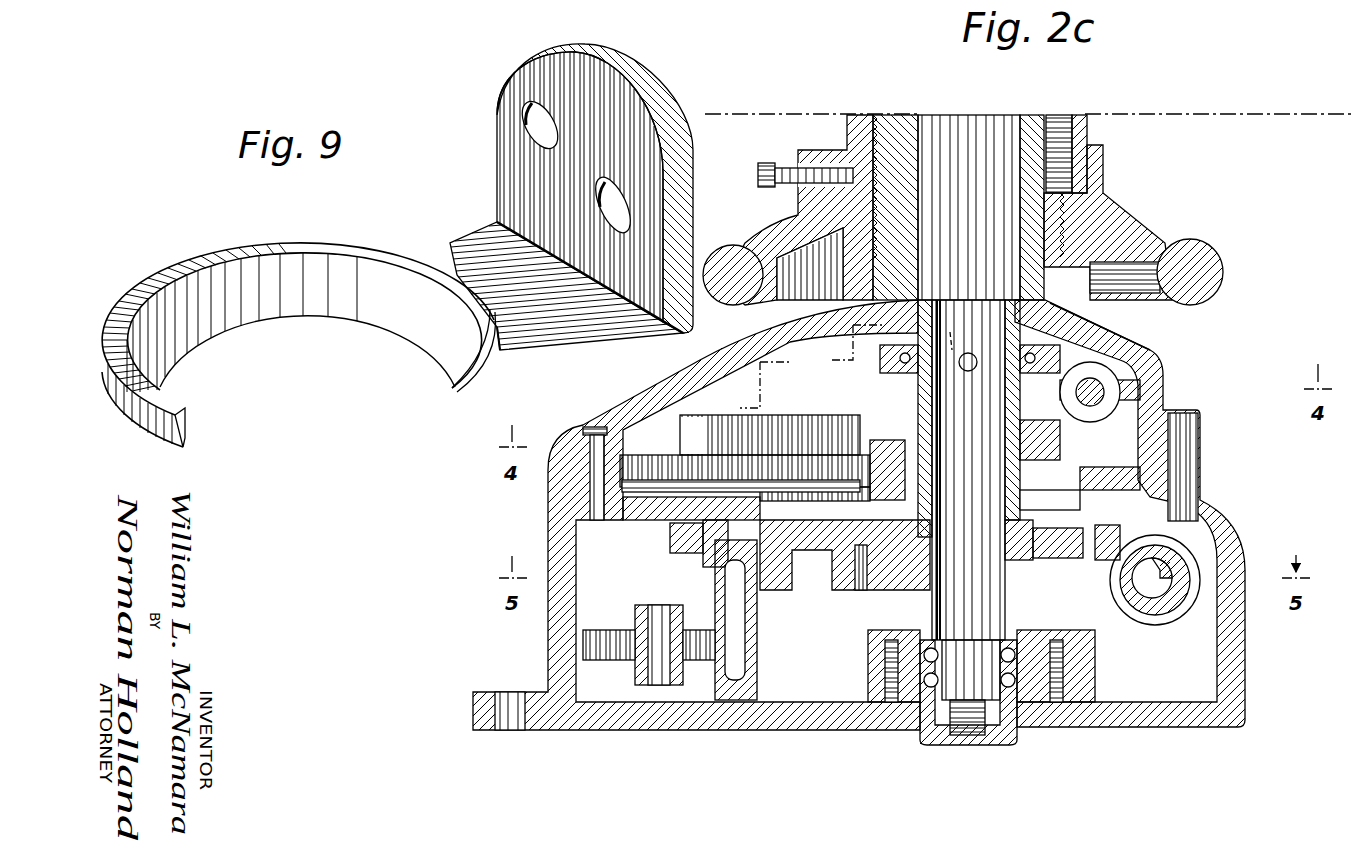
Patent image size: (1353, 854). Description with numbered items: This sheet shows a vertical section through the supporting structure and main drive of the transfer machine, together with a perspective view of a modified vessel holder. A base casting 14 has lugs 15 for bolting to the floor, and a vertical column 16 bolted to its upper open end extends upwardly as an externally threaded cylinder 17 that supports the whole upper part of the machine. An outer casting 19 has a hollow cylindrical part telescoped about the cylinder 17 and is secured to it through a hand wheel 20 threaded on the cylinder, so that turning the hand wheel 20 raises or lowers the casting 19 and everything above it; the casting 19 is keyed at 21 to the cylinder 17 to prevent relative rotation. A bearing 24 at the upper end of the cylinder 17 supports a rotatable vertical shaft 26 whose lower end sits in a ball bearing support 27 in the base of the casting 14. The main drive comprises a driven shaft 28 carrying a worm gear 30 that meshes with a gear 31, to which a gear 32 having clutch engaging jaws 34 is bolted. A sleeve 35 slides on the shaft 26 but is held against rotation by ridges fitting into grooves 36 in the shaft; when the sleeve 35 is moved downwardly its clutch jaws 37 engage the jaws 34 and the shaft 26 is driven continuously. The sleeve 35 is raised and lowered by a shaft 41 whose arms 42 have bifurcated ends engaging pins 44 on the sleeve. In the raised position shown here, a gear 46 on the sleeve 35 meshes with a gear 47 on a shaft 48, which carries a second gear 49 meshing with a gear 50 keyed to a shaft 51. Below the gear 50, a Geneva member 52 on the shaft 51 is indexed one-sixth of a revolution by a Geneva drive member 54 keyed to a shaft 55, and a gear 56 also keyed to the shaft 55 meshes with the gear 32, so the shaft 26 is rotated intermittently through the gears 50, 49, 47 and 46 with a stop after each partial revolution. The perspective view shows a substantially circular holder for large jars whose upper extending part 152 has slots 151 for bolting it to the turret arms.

In FIG. 2C, the base casting 14 is at (1252, 654).
In FIG. 2C, the lugs 15 is at (473, 700).
In FIG. 2C, the vertical column 16 is at (1140, 349).
In FIG. 2C, the externally threaded cylinder 17 is at (890, 122).
In FIG. 2C, the casting 19 is at (850, 129).
In FIG. 2C, the hand wheel 20 is at (1118, 216).
In FIG. 2C, the key 21 is at (1058, 122).
In FIG. 2C, the bearing 24 is at (1022, 253).
In FIG. 2C, the rotatable shaft 26 is at (998, 116).
In FIG. 2C, the ball bearing support 27 is at (1090, 678).
In FIG. 2C, the driven shaft 28 is at (1160, 565).
In FIG. 2C, the worm gear 30 is at (1197, 578).
In FIG. 2C, the gear 31 is at (1127, 590).
In FIG. 2C, the gear 32 is at (1097, 532).
In FIG. 2C, the clutch engaging jaws 34 is at (1025, 527).
In FIG. 2C, the sleeve 35 is at (932, 312).
In FIG. 2C, the grooves 36 is at (1013, 350).
In FIG. 2C, the clutch jaws 37 is at (1034, 481).
In FIG. 2C, the shaft 41 is at (1098, 381).
In FIG. 2C, the arms 42 is at (1012, 360).
In FIG. 2C, the pins 44 is at (928, 339).
In FIG. 2C, the gear 46 is at (1072, 436).
In FIG. 2C, the gear 47 is at (787, 422).
In FIG. 2C, the shaft 48 is at (828, 386).
In FIG. 2C, the gear 49 is at (830, 463).
In FIG. 2C, the gear 50 is at (577, 530).
In FIG. 2C, the shaft 51 is at (715, 366).
In FIG. 2C, the Geneva member 52 is at (604, 636).
In FIG. 2C, the Geneva drive member 54 is at (642, 606).
In FIG. 2C, the shaft 55 is at (733, 667).
In FIG. 2C, the gear 56 is at (687, 535).
In FIG. 9, the slots 151 is at (527, 135).
In FIG. 9, the upper extending part 152 is at (613, 78).